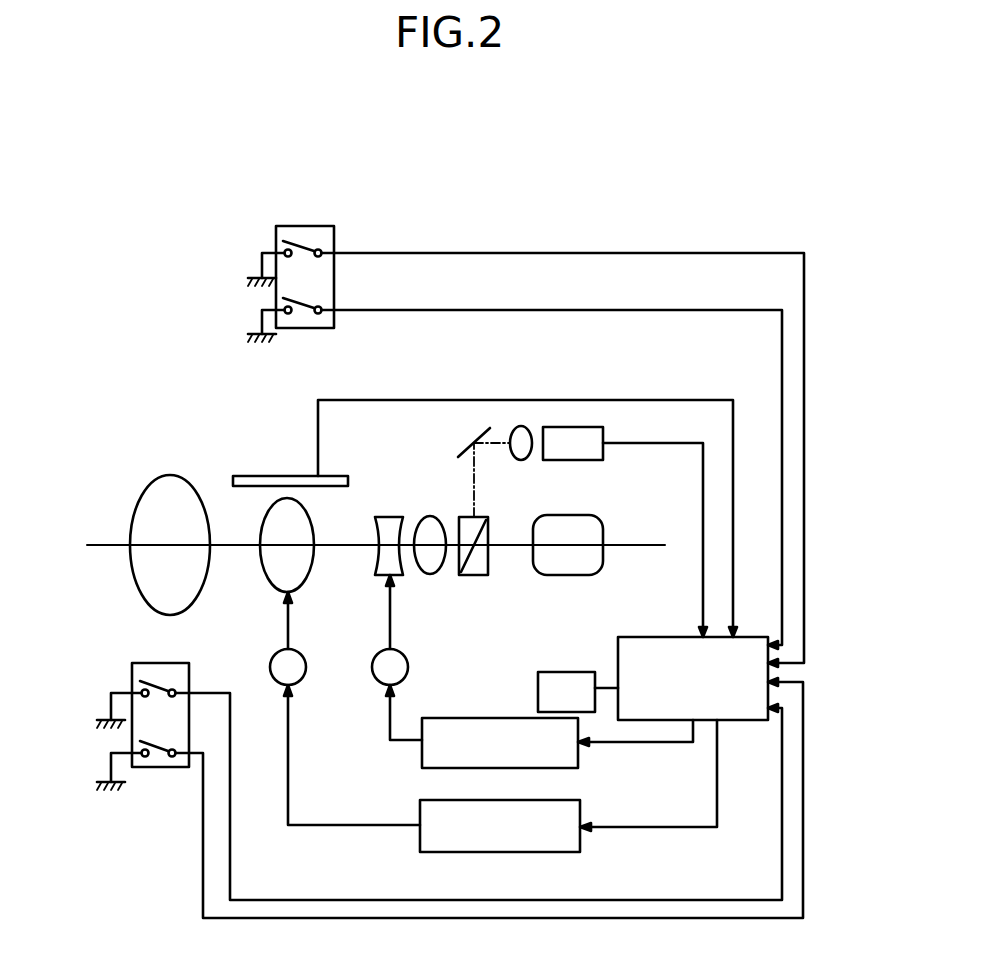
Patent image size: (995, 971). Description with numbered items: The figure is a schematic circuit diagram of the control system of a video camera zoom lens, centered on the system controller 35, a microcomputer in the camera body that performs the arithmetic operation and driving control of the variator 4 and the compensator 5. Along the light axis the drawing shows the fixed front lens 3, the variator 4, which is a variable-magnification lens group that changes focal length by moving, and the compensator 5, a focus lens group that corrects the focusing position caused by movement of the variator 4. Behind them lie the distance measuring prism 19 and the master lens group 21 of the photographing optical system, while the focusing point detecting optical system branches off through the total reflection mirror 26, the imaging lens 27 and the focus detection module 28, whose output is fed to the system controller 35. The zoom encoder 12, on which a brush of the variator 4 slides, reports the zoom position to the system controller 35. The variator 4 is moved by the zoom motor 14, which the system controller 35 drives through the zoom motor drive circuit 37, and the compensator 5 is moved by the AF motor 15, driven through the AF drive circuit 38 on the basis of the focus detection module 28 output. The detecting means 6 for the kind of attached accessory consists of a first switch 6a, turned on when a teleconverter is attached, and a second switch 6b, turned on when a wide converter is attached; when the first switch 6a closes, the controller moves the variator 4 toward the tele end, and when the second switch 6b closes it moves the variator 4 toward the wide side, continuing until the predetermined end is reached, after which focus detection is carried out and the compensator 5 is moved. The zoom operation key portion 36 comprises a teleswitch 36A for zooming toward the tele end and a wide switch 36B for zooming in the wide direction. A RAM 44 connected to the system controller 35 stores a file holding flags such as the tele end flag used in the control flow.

The front lens 3 is at (155, 497).
The variator 4 is at (302, 521).
The compensator 5 is at (392, 528).
The detecting means 6 is at (180, 768).
The first switch 6a is at (150, 680).
The second switch 6b is at (160, 757).
The zoom encoder 12 is at (262, 476).
The zoom motor 14 is at (292, 662).
The AF motor 15 is at (393, 662).
The distance measuring prism 19 is at (474, 578).
The master lens group 21 is at (568, 578).
The total reflection mirror 26 is at (478, 433).
The imaging lens 27 is at (520, 461).
The focus detection module 28 is at (584, 461).
The system controller 35 is at (618, 641).
The zoom operation key portion 36 is at (320, 226).
The teleswitch 36A is at (290, 243).
The wide switch 36B is at (303, 313).
The zoom motor drive circuit 37 is at (420, 806).
The AF drive circuit 38 is at (437, 718).
The RAM 44 is at (538, 682).